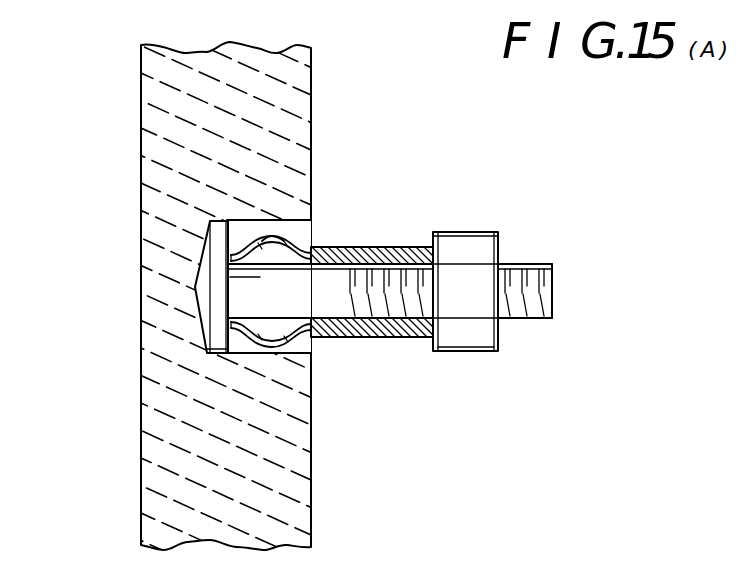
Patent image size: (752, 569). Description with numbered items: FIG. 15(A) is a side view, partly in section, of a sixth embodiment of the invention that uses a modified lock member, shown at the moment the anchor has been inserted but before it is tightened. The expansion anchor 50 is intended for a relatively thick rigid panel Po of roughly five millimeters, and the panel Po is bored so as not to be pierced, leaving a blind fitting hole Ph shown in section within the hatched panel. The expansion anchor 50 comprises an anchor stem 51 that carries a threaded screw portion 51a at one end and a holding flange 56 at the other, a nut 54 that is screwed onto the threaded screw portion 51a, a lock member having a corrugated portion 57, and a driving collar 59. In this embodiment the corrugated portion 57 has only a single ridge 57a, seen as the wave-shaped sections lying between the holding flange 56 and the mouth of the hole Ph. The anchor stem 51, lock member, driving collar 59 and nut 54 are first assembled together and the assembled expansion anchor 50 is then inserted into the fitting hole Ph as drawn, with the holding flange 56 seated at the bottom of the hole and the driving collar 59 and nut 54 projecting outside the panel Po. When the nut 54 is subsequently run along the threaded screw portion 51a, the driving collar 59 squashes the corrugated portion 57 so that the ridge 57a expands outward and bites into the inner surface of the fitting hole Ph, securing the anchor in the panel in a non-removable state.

The panel Po is at (311, 54).
The blind hole Ph is at (280, 356).
The expansion anchor 50 is at (354, 274).
The anchor stem 51 is at (426, 248).
The threaded screw portion 51a is at (530, 310).
The nut 54 is at (470, 342).
The holding flange 56 is at (215, 307).
The corrugated portion 57 is at (296, 245).
The ridge 57a is at (273, 231).
The driving collar 59 is at (372, 337).